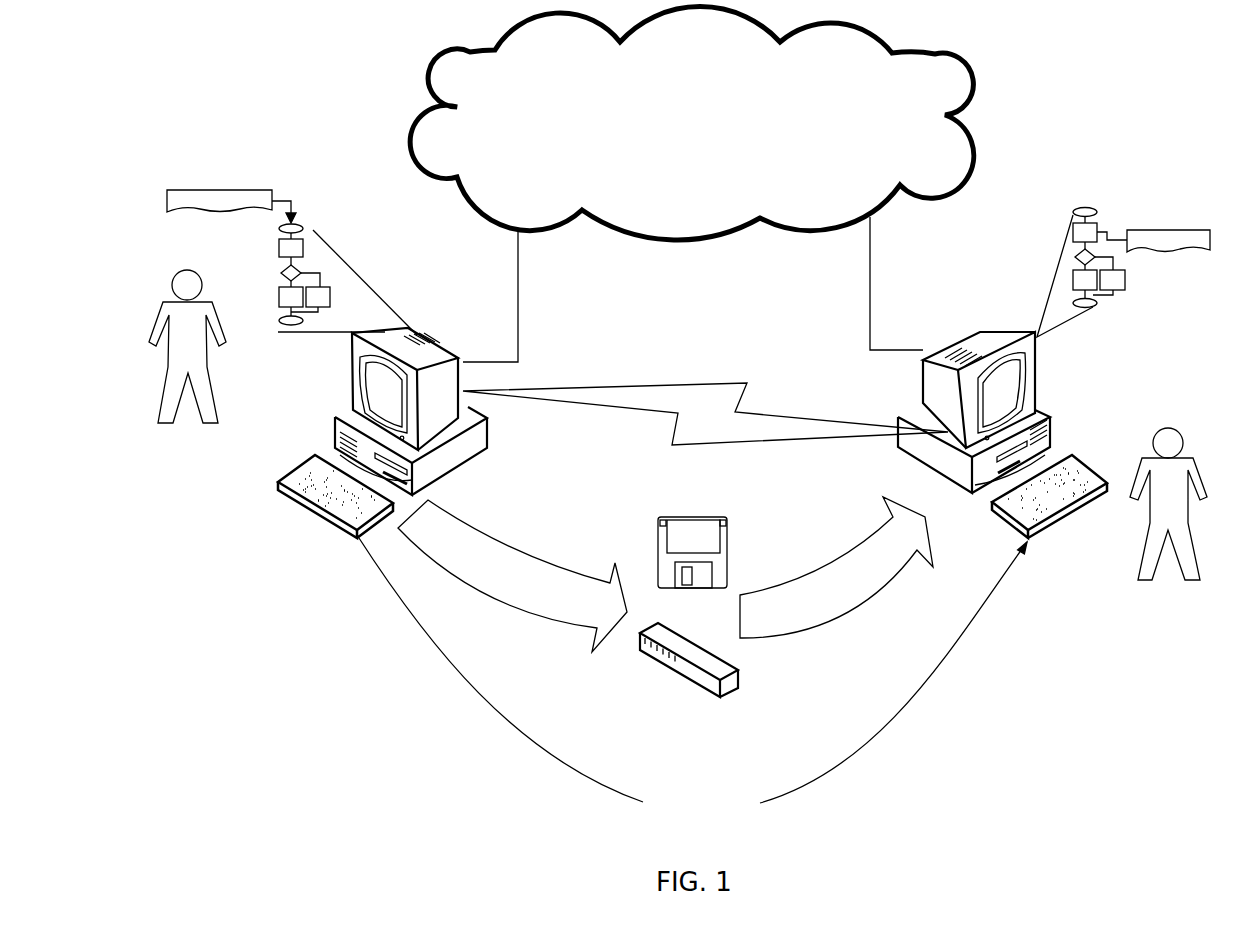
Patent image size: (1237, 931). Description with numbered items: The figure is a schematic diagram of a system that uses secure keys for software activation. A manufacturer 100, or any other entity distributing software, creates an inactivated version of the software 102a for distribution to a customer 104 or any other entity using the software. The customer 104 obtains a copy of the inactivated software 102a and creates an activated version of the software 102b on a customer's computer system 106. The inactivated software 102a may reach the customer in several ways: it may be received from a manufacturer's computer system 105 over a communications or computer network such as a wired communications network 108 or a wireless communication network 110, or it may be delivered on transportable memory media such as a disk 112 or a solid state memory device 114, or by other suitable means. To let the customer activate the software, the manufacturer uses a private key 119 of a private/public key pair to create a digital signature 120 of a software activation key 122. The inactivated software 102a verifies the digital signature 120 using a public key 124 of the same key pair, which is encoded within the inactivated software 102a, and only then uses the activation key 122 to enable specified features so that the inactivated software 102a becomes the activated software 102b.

The manufacturer 100 is at (183, 268).
The inactivated software 102a is at (291, 215).
The activated software 102b is at (1090, 206).
The customer 104 is at (1168, 428).
The manufacturer's computer system 105 is at (357, 395).
The customer's computer system 106 is at (1050, 417).
The wired communications network 108 is at (410, 125).
The wireless communication network 110 is at (724, 383).
The disk 112 is at (693, 517).
The solid state memory device 114 is at (688, 663).
The private key 119 is at (215, 190).
The digital signature 120 is at (717, 830).
The software activation key 122 is at (722, 793).
The public key 124 is at (1173, 230).